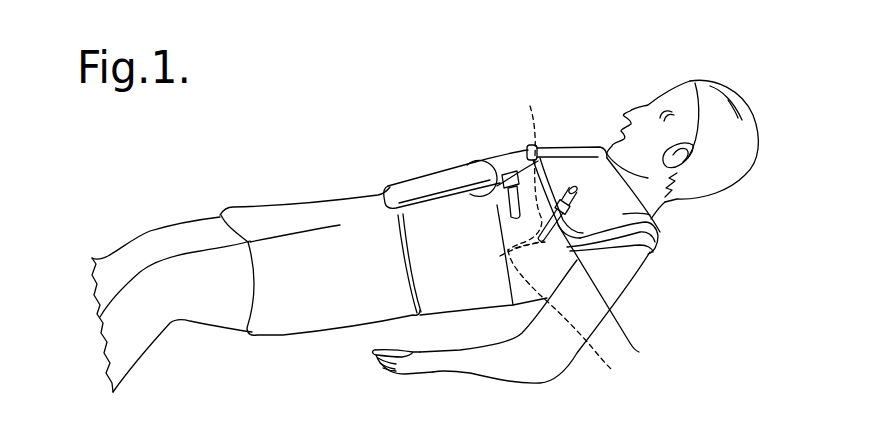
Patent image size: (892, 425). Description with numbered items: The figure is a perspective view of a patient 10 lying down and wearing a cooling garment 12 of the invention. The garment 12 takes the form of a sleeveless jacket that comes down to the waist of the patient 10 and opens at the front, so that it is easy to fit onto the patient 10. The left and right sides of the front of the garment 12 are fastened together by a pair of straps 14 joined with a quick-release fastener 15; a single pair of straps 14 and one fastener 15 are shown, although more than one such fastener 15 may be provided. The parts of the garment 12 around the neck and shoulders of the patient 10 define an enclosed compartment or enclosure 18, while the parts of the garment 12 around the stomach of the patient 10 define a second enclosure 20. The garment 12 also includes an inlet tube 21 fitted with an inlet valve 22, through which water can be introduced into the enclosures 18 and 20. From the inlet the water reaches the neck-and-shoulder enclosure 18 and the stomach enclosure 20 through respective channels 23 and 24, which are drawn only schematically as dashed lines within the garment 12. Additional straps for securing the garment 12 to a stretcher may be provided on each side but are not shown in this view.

The patient 10 is at (621, 273).
The garment 12 is at (556, 147).
The straps 14 is at (497, 205).
The quick-release fastener 15 is at (514, 172).
The enclosure 18 is at (660, 232).
The enclosure 20 is at (418, 189).
The inlet tube 21 is at (607, 293).
The inlet valve 22 is at (557, 208).
The channel 23 is at (522, 170).
The channel 24 is at (573, 322).